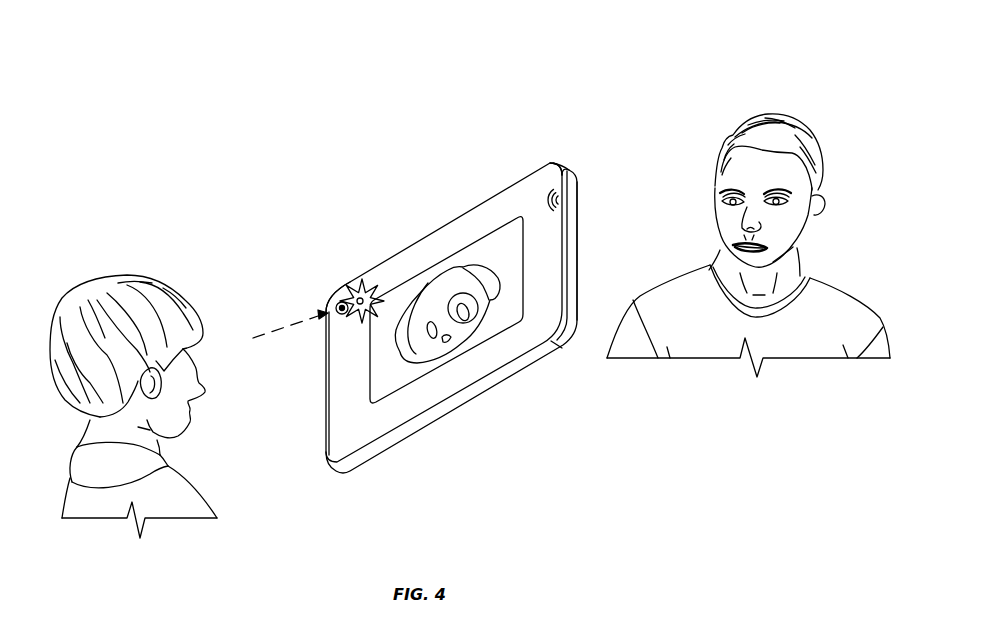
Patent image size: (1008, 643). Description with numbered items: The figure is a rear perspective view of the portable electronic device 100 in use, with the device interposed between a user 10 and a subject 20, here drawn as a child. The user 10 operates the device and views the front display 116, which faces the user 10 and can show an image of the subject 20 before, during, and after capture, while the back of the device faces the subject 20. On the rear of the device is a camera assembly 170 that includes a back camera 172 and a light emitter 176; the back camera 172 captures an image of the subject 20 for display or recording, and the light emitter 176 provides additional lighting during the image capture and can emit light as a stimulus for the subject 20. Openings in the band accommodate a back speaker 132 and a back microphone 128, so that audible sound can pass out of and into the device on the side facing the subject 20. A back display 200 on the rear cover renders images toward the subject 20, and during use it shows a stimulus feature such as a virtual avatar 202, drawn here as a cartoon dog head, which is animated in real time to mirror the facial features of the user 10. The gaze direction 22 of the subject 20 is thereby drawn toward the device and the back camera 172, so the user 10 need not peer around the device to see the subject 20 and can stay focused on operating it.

The user 10 is at (718, 103).
The subject 20 is at (42, 296).
The gaze direction 22 is at (287, 328).
The portable electronic device 100 is at (395, 201).
The front display 116 is at (578, 181).
The back microphone 128 is at (568, 280).
The back speaker 132 is at (568, 202).
The camera assembly 170 is at (325, 283).
The back camera 172 is at (342, 302).
The light emitter 176 is at (362, 285).
The back display 200 is at (448, 265).
The virtual avatar 202 is at (445, 343).